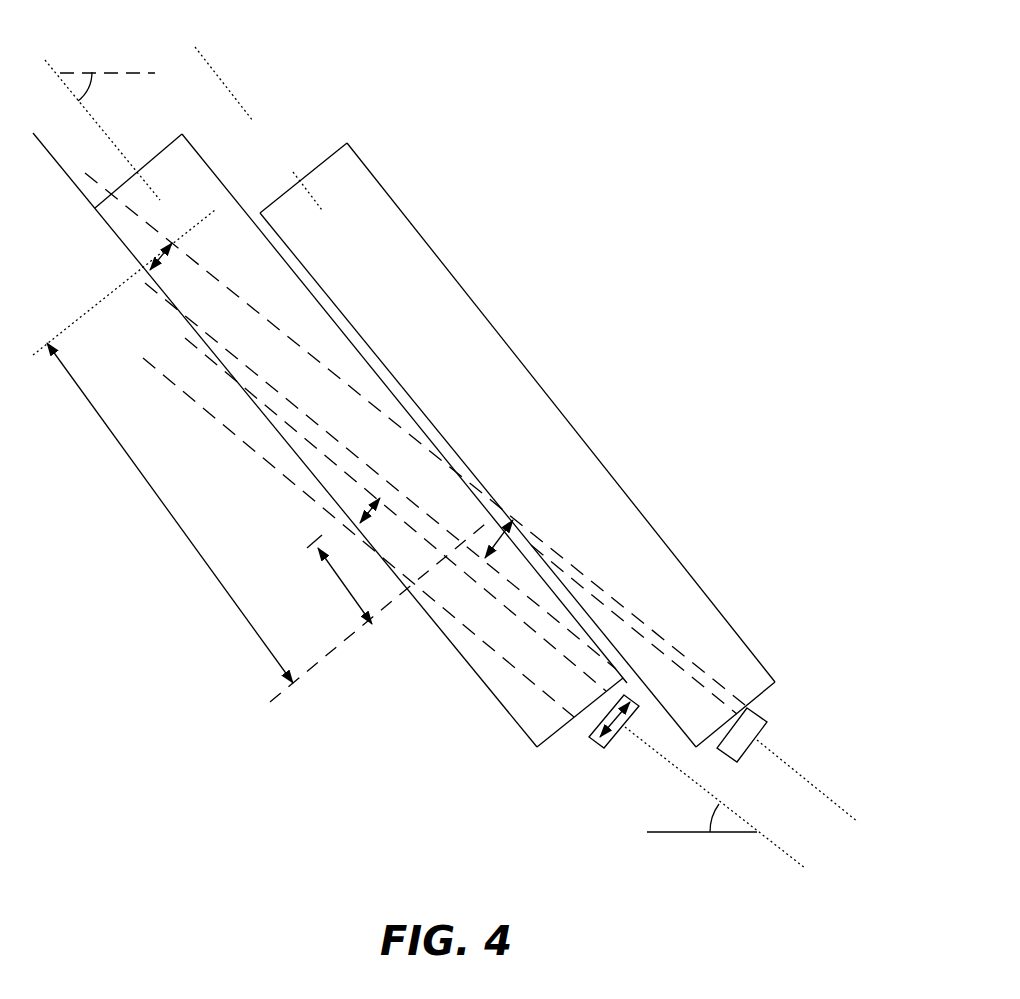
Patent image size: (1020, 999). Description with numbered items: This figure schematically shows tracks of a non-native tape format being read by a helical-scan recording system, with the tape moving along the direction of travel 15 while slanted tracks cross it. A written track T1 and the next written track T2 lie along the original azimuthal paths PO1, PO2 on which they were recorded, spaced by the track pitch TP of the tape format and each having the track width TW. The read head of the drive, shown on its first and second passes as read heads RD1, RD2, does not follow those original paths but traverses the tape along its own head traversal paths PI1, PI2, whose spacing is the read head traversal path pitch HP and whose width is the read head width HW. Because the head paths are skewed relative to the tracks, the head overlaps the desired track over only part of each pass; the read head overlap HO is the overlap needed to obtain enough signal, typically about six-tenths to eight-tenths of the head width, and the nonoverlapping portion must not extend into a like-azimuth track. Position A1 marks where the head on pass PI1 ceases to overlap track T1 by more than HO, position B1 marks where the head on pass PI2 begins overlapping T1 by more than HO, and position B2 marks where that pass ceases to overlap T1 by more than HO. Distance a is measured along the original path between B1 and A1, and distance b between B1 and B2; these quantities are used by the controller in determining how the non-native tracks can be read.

The direction of travel 15 is at (548, 180).
The written track T1 is at (157, 155).
The next written track T2 is at (323, 157).
The track pitch TP is at (153, 197).
The track width TW is at (389, 198).
The original azimuthal path PO1 is at (100, 117).
The original azimuthal path PO2 is at (258, 120).
The read head traversal path pitch HP is at (555, 618).
The read head width HW is at (606, 718).
The read head overlap HO is at (163, 250).
The head overlap position HO_ A1 is at (302, 533).
The head overlap position HO_ B1 is at (488, 545).
The head overlap position HO_ B2 is at (124, 282).
The distance a is at (345, 586).
The distance b is at (170, 513).
The read head on pass one RD1 is at (621, 738).
The read head on pass two RD2 is at (760, 754).
The head traversal path PI1 is at (741, 803).
The head traversal path PI2 is at (832, 795).